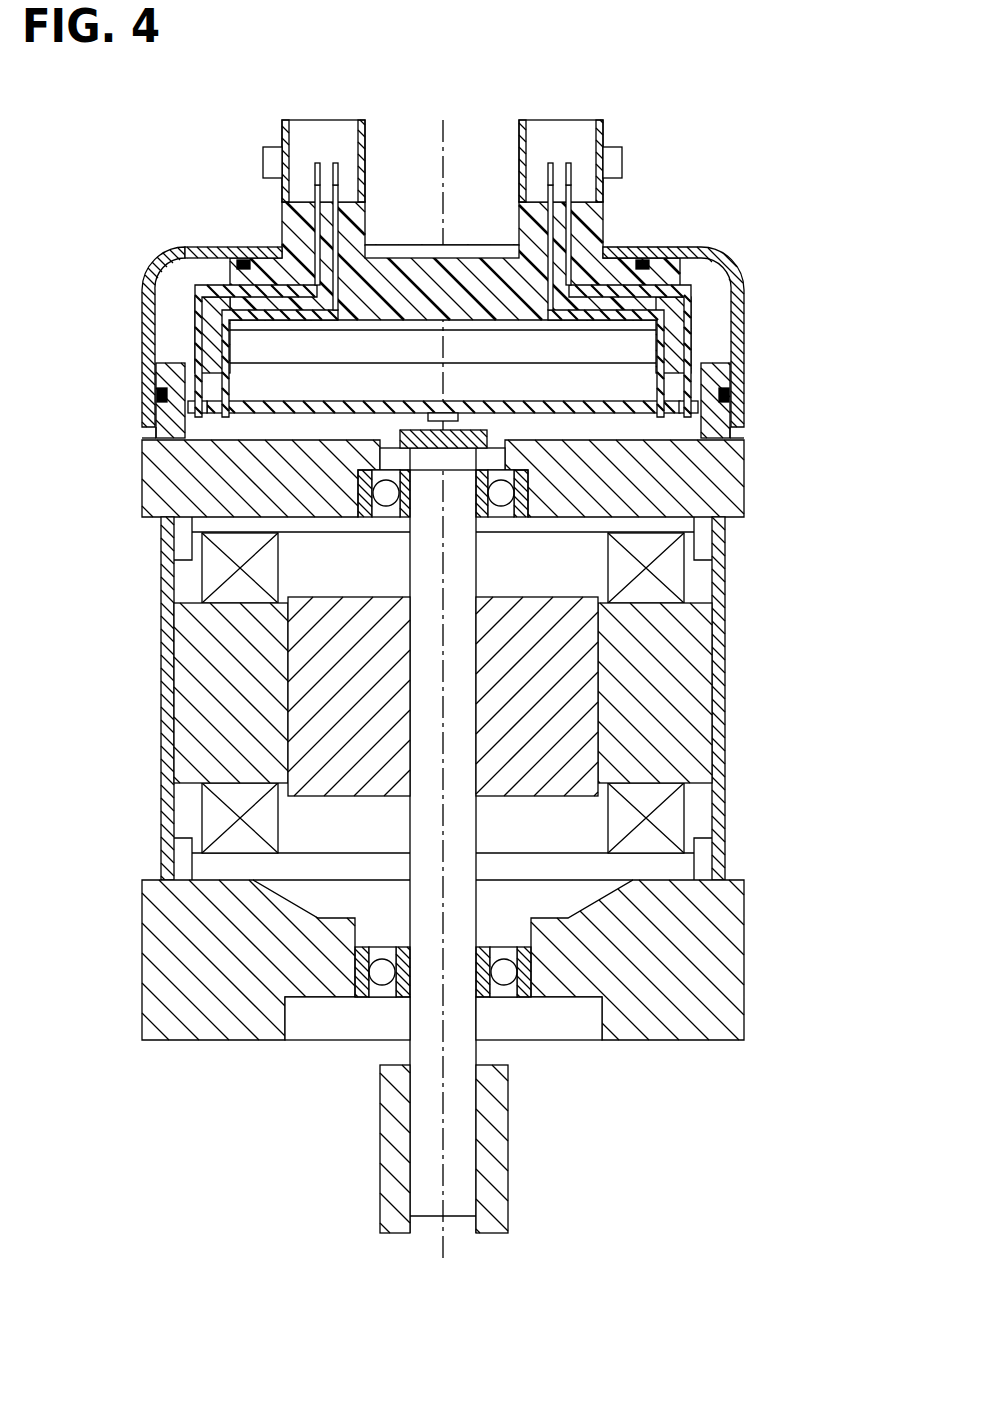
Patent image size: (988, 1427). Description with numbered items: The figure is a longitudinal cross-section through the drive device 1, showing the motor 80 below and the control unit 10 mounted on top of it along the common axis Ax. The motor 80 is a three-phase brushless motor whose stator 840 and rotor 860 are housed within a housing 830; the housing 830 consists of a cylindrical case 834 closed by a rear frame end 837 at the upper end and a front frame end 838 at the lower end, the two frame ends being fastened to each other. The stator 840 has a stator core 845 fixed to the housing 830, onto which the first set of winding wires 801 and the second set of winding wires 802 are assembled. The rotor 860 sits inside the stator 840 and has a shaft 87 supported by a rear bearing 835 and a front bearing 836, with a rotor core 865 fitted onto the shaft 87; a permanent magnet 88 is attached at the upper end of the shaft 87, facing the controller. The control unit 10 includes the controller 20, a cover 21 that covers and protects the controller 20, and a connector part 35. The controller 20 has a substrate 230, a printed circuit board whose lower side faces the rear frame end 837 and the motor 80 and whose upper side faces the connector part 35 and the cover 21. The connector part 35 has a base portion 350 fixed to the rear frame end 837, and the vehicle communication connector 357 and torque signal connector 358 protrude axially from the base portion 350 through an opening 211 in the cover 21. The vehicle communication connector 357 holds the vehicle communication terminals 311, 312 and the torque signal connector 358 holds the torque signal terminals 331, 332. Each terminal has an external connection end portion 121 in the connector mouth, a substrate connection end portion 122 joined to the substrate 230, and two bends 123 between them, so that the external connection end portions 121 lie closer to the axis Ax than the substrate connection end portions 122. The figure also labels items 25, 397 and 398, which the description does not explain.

The drive device 1 is at (135, 185).
The control unit 10 is at (188, 240).
The controller 20 is at (722, 372).
The cover 21 is at (668, 250).
The opening 211 is at (278, 240).
The substrate 230 is at (162, 378).
The circuit board 25 is at (430, 413).
The connector part 35 is at (282, 120).
The vehicle communication connector 357 is at (282, 135).
The torque signal connector 358 is at (603, 135).
The lock projection 397 is at (263, 162).
The lock projection 398 is at (622, 162).
The vehicle communication terminal 311 is at (321, 192).
The vehicle communication terminal 312 is at (339, 215).
The torque signal terminal 331 is at (565, 192).
The torque signal terminal 332 is at (547, 215).
The base portion 350 is at (428, 268).
The external connection end portion 121 is at (569, 163).
The substrate connection end portion 122 is at (195, 408).
The bend 123 is at (224, 315).
The motor 80 is at (140, 948).
The first set of winding wires 801 is at (215, 578).
The second set of winding wires 802 is at (670, 568).
The housing 830 is at (727, 620).
The cylindrical case 834 is at (720, 652).
The rear bearing 835 is at (728, 495).
The front bearing 836 is at (505, 972).
The rear frame end 837 is at (502, 493).
The front frame end 838 is at (718, 1000).
The stator 840 is at (194, 798).
The stator core 845 is at (205, 668).
The rotor 860 is at (297, 798).
The rotor core 865 is at (318, 715).
The shaft 87 is at (428, 757).
The permanent magnet 88 is at (440, 441).
The axis Ax is at (445, 1248).